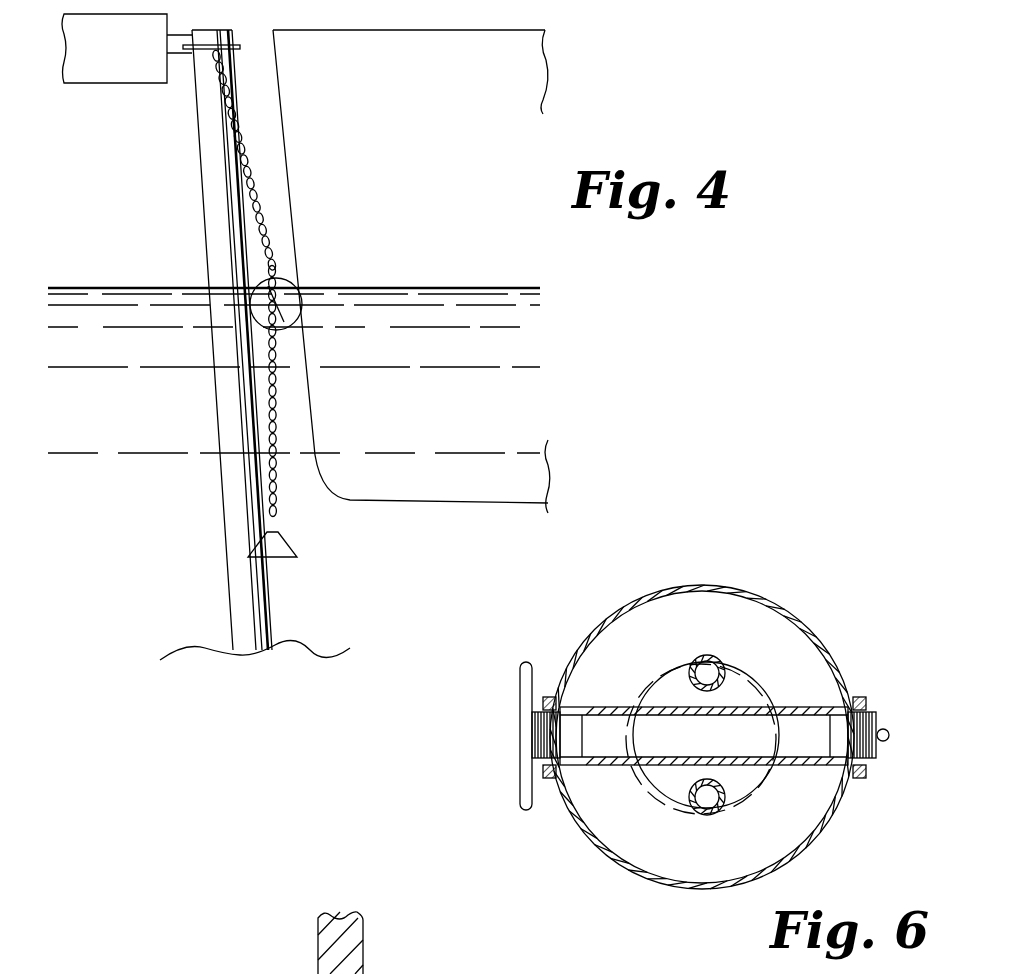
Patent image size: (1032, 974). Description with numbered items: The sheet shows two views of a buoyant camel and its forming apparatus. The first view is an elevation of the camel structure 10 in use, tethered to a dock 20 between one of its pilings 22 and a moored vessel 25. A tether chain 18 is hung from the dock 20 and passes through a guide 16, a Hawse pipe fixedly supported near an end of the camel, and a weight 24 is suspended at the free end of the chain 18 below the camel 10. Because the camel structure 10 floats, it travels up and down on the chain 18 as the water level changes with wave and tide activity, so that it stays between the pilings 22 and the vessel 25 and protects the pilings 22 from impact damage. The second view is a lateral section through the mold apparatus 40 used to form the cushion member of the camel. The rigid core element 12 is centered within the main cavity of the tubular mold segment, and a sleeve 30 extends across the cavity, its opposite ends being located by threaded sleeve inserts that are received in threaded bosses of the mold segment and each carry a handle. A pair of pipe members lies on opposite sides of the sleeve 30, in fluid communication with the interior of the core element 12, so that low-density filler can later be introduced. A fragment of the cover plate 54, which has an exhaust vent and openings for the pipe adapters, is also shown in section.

In FIG. 4, the camel structure 10 is at (298, 283).
In FIG. 6, the core element 12 is at (752, 795).
In FIG. 4, the guide 16 is at (287, 327).
In FIG. 4, the tether chain 18 is at (277, 485).
In FIG. 4, the dock 20 is at (173, 23).
In FIG. 4, the piling 22 is at (203, 210).
In FIG. 4, the weight 24 is at (298, 557).
In FIG. 4, the moored vessel 25 is at (343, 30).
In FIG. 6, the sleeve 30 is at (598, 766).
In FIG. 6, the mold apparatus 40 is at (658, 894).
In FIG. 6, the cover plate 54 is at (318, 950).